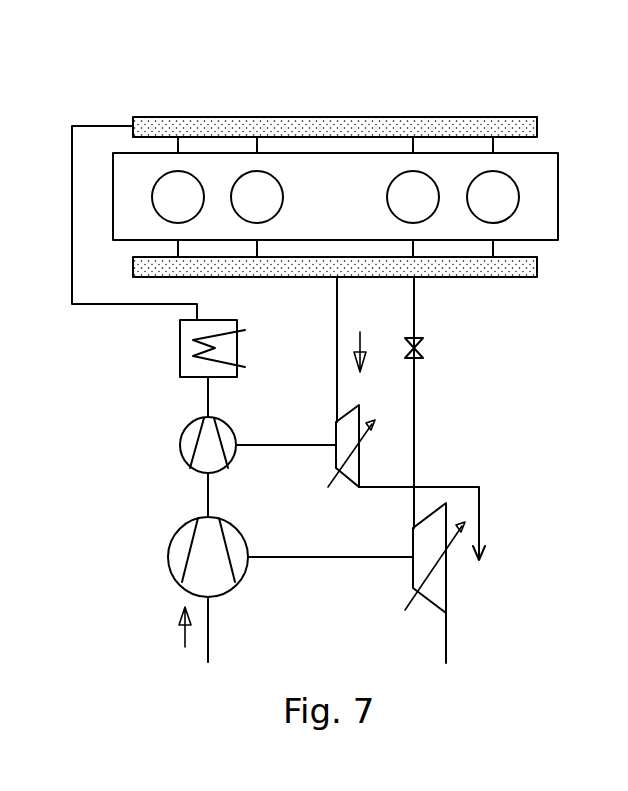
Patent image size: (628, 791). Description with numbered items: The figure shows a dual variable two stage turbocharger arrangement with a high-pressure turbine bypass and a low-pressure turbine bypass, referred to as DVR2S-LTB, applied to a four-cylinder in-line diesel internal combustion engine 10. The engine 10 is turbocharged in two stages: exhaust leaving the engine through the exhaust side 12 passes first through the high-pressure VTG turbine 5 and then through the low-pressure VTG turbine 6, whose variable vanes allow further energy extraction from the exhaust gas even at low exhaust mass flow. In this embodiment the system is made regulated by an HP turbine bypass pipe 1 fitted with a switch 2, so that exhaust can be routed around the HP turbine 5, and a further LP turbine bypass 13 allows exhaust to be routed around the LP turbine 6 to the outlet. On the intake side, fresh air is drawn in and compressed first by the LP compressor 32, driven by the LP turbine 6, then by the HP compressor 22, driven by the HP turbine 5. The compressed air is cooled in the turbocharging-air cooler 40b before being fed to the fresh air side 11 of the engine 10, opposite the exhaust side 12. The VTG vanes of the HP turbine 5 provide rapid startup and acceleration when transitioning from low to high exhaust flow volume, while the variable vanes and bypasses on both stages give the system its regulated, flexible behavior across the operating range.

The internal combustion engine 10 is at (493, 102).
The fresh air side 11 is at (333, 117).
The exhaust manifold 12 is at (530, 267).
The HP turbine bypass pipe 1 is at (414, 303).
The switch 2 is at (422, 350).
The HP turbine 5 is at (336, 432).
The LP VTG turbine 6 is at (418, 570).
The LP turbine bypass 13 is at (460, 487).
The HP compressor 22 is at (186, 450).
The LP compressor 32 is at (178, 545).
The turbocharging-air cooler 40b is at (185, 350).